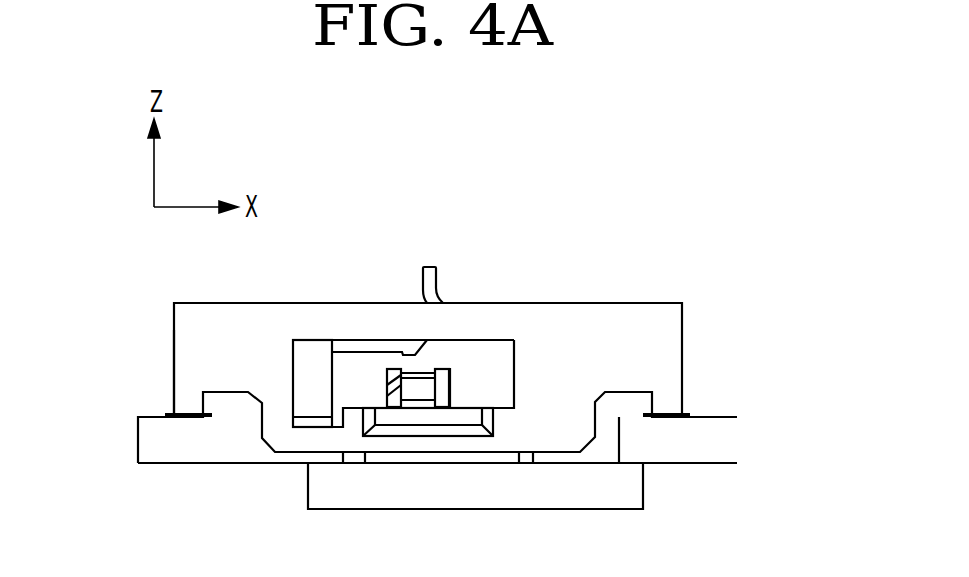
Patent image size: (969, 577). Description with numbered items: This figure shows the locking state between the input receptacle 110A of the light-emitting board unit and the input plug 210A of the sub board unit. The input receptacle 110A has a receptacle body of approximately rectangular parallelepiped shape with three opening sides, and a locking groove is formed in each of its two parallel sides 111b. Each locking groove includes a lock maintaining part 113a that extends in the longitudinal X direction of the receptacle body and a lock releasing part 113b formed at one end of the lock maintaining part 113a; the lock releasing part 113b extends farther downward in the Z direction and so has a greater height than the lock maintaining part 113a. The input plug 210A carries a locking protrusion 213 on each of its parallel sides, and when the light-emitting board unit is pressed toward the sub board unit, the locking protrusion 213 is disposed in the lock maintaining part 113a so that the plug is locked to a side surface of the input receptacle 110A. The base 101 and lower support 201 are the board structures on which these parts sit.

The input receptacle 110A is at (195, 310).
The side of receptacle body 111b is at (188, 363).
The base 101 is at (148, 443).
The lower support member 201 is at (613, 504).
The lock releasing part 113b is at (314, 380).
The lock maintaining part 113a is at (489, 380).
The input plug 210A is at (372, 383).
The locking protrusion 213 is at (430, 390).